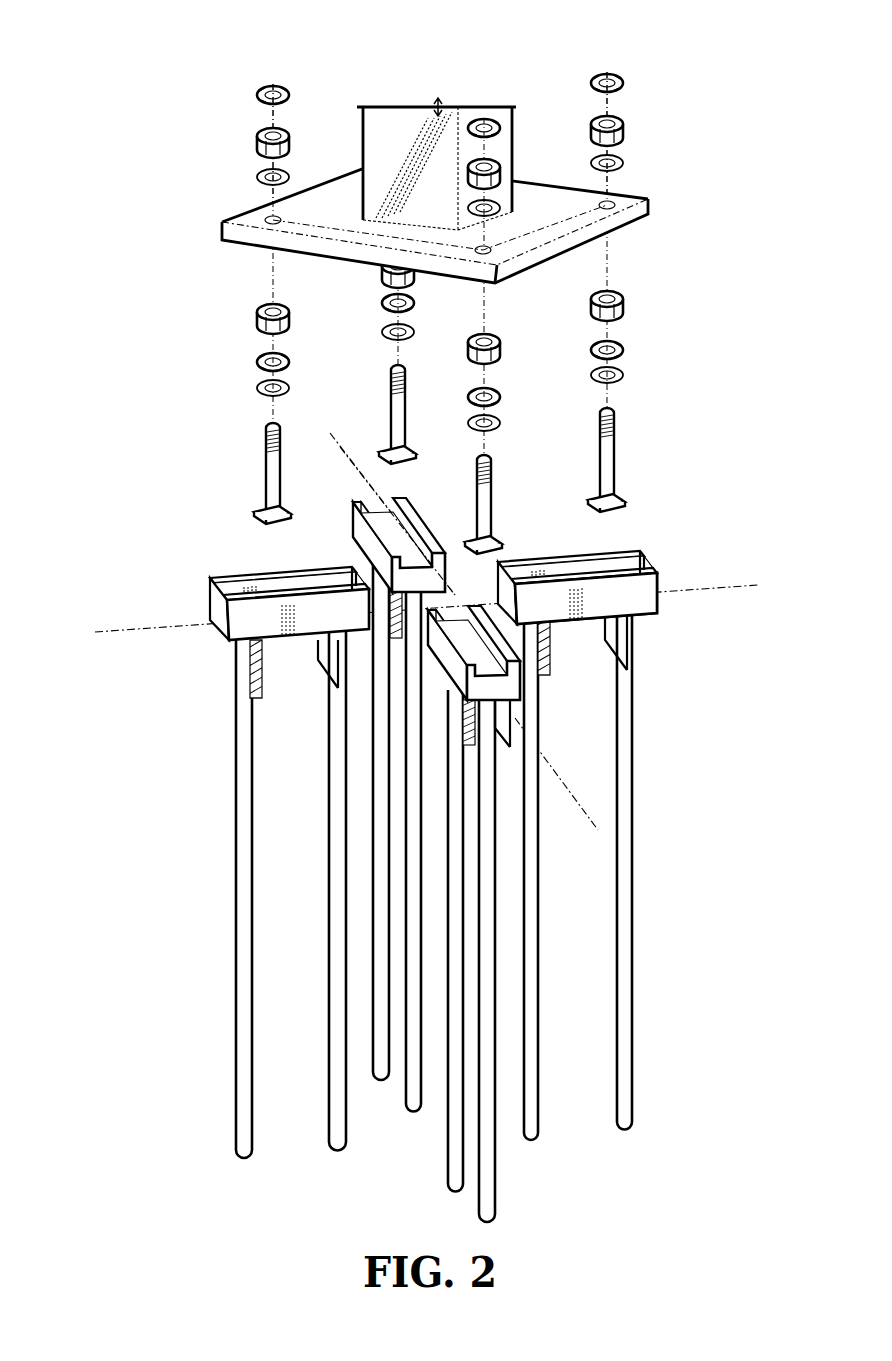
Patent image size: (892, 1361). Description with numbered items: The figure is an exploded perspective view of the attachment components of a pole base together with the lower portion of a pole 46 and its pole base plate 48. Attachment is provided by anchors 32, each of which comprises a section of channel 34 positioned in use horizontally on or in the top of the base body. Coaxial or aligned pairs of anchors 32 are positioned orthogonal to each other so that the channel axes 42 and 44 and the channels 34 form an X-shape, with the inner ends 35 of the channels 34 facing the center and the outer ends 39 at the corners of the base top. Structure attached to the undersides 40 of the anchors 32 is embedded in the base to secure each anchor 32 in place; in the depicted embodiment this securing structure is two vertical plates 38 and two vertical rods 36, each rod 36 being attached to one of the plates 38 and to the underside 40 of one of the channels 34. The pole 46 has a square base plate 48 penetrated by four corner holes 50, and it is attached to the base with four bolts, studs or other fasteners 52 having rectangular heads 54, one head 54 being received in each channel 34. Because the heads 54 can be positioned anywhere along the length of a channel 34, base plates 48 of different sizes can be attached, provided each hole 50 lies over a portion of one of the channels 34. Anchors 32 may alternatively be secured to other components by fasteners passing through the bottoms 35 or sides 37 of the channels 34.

The anchor 32 is at (663, 575).
The channel 34 is at (637, 602).
The inner end of channel 35 is at (457, 575).
The vertical rod 36 is at (635, 757).
The side of channel 37 is at (312, 628).
The vertical plate 38 is at (608, 638).
The outer end of channel 39 is at (212, 602).
The underside of anchor 40 is at (283, 645).
The channel axis 42 is at (150, 632).
The channel axis 44 is at (343, 456).
The pole 46 is at (378, 135).
The base plate 48 is at (632, 196).
The corner hole 50 is at (266, 220).
The fastener 52 is at (612, 453).
The rectangular head 54 is at (627, 503).